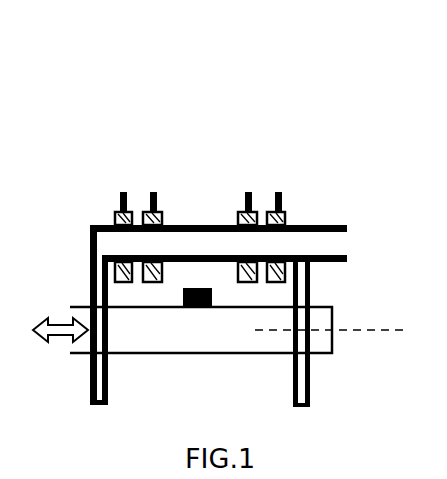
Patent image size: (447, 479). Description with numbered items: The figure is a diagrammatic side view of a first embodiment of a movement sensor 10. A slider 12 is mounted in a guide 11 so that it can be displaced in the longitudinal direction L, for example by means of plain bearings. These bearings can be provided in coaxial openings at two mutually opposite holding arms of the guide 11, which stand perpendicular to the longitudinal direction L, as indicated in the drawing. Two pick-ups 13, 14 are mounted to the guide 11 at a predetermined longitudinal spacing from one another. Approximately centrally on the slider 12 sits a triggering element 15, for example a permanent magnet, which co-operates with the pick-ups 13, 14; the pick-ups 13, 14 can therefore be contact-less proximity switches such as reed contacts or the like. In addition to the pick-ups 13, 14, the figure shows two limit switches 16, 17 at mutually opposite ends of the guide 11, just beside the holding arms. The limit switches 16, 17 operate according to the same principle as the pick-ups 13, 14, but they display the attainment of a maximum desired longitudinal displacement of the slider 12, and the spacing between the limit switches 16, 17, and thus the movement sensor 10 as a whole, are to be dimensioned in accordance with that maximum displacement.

The movement sensor 10 is at (120, 118).
The guide 11 is at (320, 238).
The slider 12 is at (169, 334).
The pick-up 13 is at (158, 212).
The pick-up 14 is at (247, 212).
The triggering element 15 is at (203, 308).
The limit switch 16 is at (117, 212).
The limit switch 17 is at (284, 212).
The longitudinal direction L is at (329, 344).